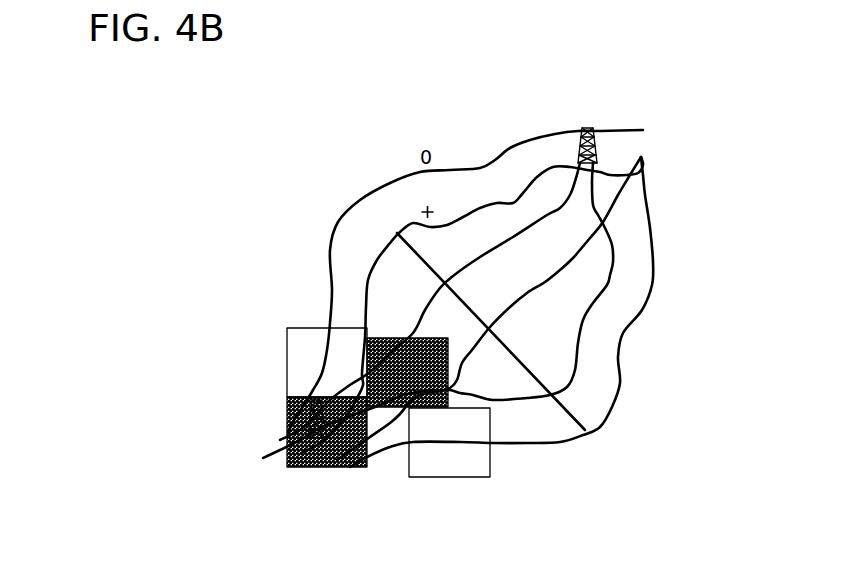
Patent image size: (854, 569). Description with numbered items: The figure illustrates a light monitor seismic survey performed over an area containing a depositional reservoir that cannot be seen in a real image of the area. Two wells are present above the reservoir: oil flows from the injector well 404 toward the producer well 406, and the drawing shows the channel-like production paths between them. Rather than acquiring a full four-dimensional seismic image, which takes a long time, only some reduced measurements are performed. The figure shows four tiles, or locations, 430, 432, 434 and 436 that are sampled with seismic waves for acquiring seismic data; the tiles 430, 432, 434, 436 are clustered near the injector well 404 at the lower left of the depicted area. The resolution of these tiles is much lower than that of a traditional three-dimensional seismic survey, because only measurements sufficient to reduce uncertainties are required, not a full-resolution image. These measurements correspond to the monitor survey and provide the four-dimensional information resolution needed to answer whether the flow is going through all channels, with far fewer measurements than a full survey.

The injector well 404 is at (282, 449).
The producer well 406 is at (597, 143).
The tile 430 is at (313, 467).
The tile 432 is at (287, 357).
The tile 434 is at (490, 470).
The tile 436 is at (450, 370).